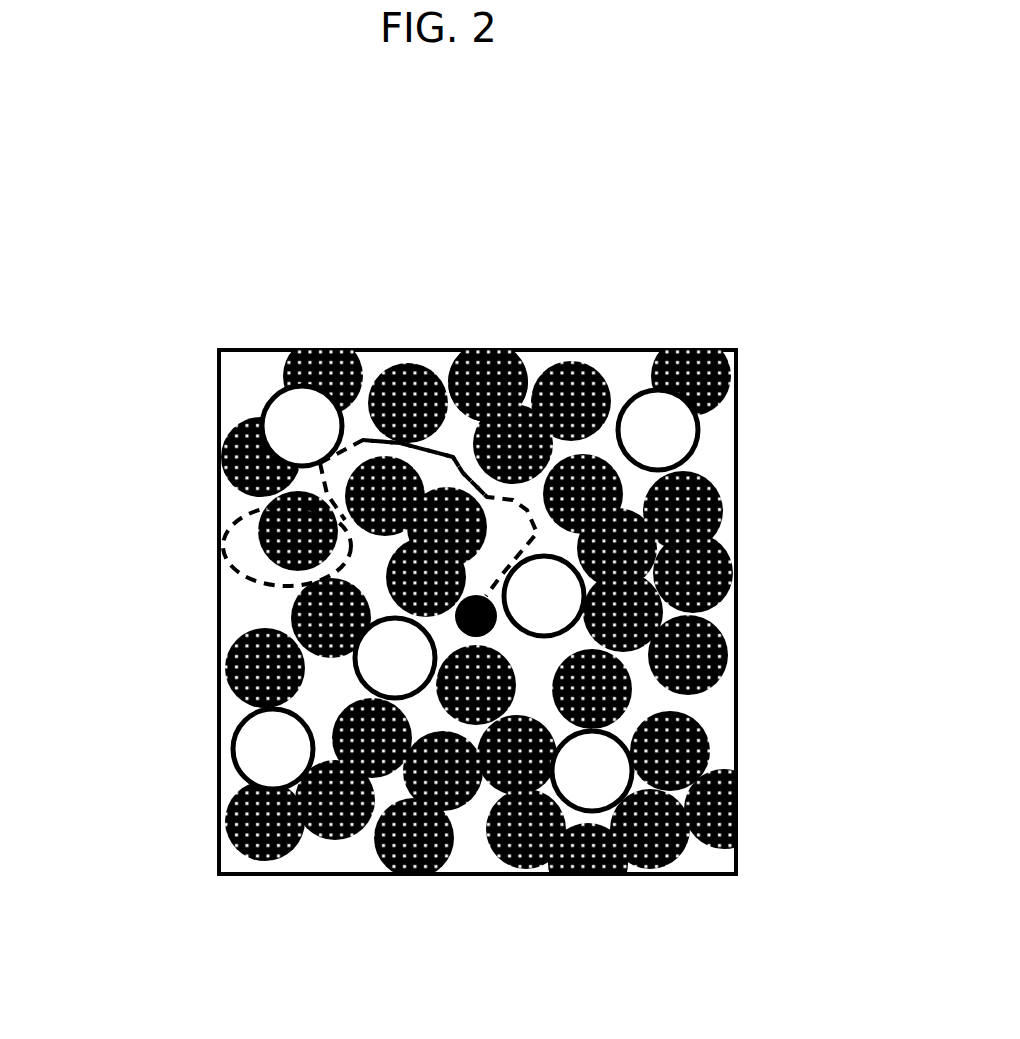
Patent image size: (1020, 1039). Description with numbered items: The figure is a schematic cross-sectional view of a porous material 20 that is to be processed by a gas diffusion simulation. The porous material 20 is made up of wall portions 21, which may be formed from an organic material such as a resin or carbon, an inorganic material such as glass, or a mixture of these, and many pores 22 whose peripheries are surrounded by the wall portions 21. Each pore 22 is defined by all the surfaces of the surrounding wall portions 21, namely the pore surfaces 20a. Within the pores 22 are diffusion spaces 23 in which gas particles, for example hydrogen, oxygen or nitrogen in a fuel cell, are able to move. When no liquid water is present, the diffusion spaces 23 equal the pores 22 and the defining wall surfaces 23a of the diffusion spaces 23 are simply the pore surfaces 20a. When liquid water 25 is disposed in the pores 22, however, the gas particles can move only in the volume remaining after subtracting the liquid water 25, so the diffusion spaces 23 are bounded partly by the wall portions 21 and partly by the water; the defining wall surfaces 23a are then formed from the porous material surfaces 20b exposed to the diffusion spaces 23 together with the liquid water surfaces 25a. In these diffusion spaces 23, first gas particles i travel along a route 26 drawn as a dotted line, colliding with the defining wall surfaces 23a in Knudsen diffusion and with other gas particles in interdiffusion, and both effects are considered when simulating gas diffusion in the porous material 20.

The porous material 20 is at (652, 176).
The pore surfaces 20a is at (232, 697).
The porous material surfaces 20b is at (441, 442).
The wall portions 21 is at (236, 668).
The pores 22 is at (513, 522).
The diffusion spaces 23 is at (517, 876).
The defining wall surfaces 23a is at (410, 190).
The liquid water 25 is at (305, 418).
The liquid water surfaces 25a is at (367, 407).
The route 26 is at (503, 356).
The first gas particles i is at (490, 633).